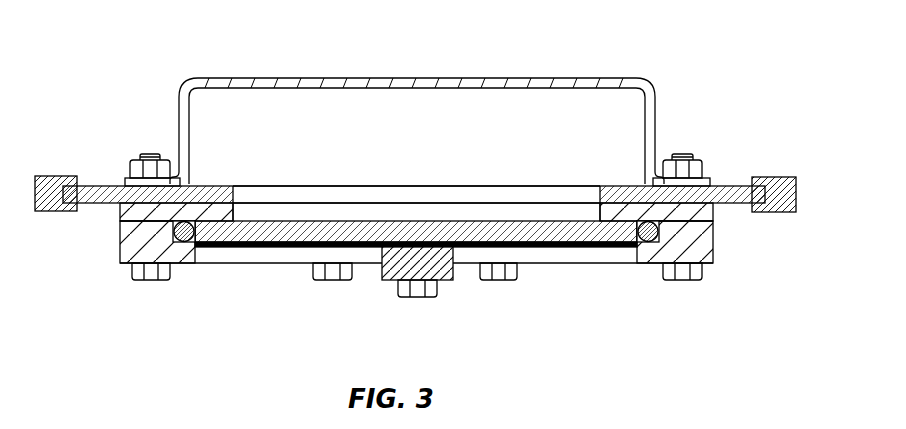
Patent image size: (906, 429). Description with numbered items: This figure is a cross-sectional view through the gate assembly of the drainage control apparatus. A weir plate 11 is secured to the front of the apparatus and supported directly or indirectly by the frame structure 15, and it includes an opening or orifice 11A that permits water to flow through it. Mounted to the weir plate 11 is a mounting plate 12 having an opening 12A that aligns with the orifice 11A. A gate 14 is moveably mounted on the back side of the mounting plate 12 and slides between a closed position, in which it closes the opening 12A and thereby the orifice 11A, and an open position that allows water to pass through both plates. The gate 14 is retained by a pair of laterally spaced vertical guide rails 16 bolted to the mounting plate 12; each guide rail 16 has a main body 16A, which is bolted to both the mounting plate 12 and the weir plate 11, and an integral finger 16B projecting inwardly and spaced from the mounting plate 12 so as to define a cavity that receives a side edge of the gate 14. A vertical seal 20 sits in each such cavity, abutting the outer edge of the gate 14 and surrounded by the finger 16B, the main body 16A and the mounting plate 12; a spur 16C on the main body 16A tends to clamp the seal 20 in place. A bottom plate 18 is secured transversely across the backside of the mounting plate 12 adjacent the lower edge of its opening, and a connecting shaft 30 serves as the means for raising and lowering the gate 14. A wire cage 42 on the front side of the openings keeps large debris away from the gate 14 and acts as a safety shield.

The weir plate 11 is at (97, 188).
The opening or orifice 11A is at (238, 195).
The mounting plate 12 is at (120, 210).
The opening 12A is at (250, 215).
The gate 14 is at (345, 222).
The frame structure 15 is at (39, 176).
The vertical guide rail 16 is at (133, 263).
The main body 16A is at (152, 223).
The finger 16B is at (213, 252).
The spur 16C is at (197, 248).
The bottom plate 18 is at (263, 264).
The vertical seal 20 is at (173, 233).
The connecting shaft 30 is at (437, 267).
The wire cage 42 is at (472, 78).